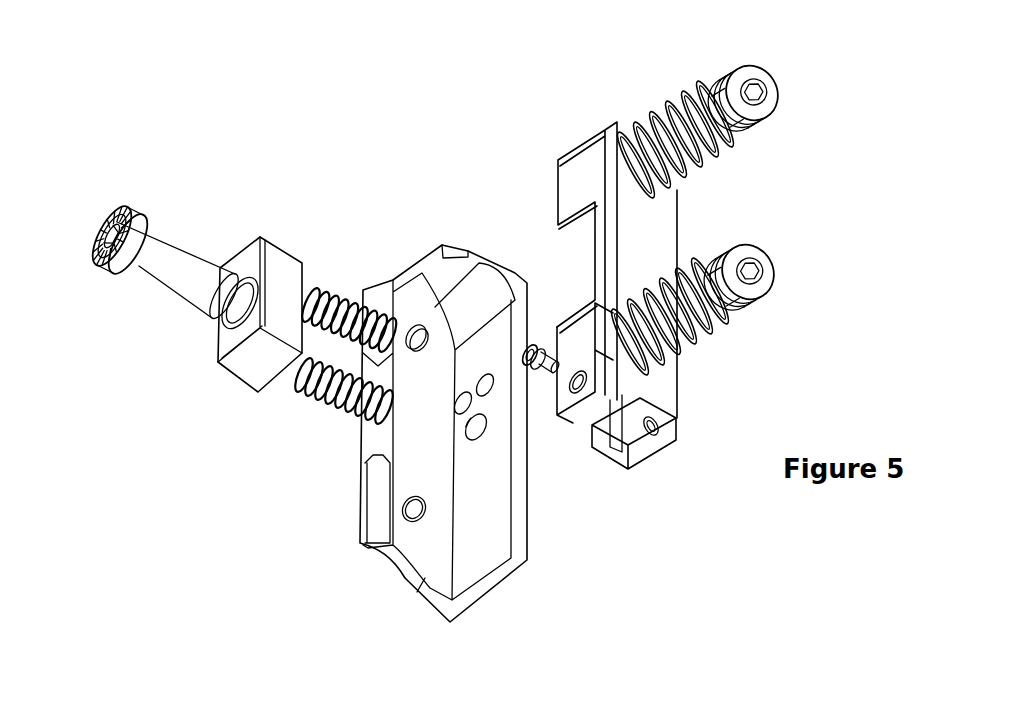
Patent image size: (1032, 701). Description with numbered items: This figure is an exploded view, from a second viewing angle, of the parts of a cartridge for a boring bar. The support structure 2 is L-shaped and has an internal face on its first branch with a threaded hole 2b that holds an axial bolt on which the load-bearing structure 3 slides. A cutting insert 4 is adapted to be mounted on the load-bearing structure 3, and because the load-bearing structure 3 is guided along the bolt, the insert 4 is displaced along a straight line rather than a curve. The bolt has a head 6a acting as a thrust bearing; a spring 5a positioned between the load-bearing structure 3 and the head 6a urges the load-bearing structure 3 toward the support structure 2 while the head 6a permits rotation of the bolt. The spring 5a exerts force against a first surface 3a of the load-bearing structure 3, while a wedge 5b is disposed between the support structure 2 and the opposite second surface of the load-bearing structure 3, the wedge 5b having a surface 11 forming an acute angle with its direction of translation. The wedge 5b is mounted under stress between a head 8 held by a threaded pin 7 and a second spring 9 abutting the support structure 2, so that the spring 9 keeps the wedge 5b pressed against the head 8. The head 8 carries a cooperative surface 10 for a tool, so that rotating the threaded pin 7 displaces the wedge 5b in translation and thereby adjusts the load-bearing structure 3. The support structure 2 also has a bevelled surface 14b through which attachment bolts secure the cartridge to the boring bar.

The support structure 2 is at (433, 562).
The threaded hole 2b is at (415, 333).
The load-bearing structure 3 is at (650, 448).
The first surface 3a is at (643, 248).
The cutting insert 4 is at (582, 408).
The spring 5a is at (680, 117).
The wedge 5b is at (225, 343).
The head 6a is at (758, 92).
The threaded pin 7 is at (173, 273).
The head 8 is at (148, 220).
The spring 9 is at (352, 305).
The cooperative surface 10 is at (118, 237).
The surface 11 is at (282, 280).
The bevelled surface 14b is at (375, 502).